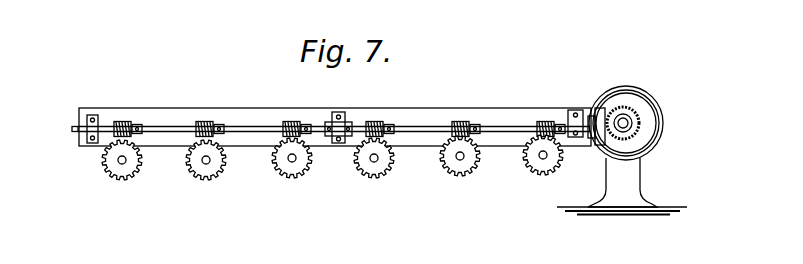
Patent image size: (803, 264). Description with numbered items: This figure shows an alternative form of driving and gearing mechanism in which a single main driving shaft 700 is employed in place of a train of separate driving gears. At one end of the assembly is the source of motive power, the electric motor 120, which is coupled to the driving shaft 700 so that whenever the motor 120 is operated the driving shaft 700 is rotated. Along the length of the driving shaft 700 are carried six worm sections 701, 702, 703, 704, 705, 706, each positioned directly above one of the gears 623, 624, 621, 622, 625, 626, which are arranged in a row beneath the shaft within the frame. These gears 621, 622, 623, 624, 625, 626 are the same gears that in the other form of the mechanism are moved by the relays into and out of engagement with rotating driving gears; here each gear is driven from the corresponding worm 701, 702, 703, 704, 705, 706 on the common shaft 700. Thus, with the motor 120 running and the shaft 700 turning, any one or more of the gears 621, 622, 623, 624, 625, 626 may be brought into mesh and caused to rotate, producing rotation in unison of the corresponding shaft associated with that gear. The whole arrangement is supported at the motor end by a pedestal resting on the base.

The driving shaft 700 is at (418, 124).
The worm 701 is at (124, 121).
The worm 702 is at (207, 121).
The worm 703 is at (293, 121).
The worm 704 is at (376, 121).
The worm 705 is at (461, 121).
The worm 706 is at (547, 121).
The gear 621 is at (295, 168).
The gear 622 is at (375, 168).
The gear 623 is at (123, 170).
The gear 624 is at (209, 170).
The gear 625 is at (461, 165).
The gear 626 is at (544, 165).
The electric motor 120 is at (596, 108).